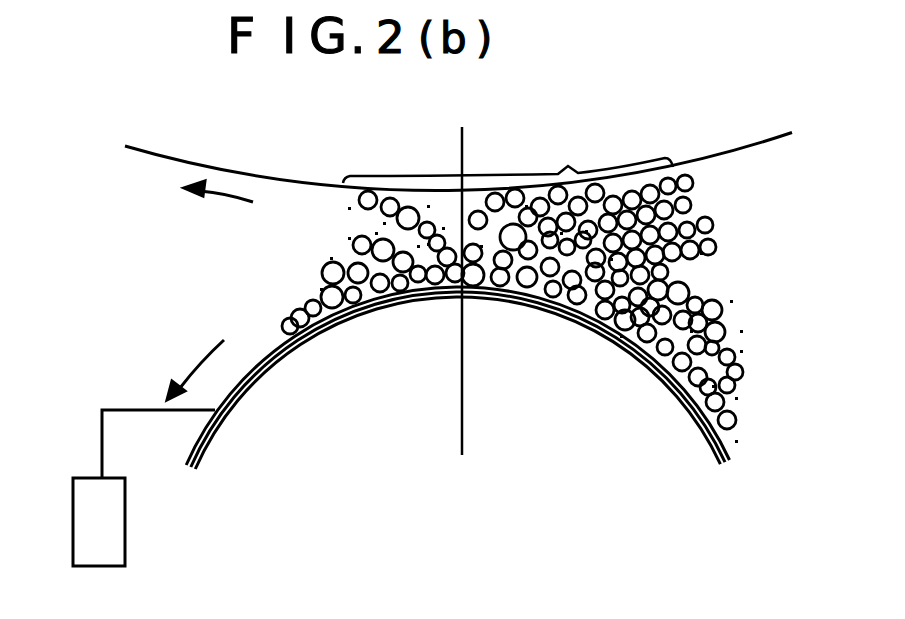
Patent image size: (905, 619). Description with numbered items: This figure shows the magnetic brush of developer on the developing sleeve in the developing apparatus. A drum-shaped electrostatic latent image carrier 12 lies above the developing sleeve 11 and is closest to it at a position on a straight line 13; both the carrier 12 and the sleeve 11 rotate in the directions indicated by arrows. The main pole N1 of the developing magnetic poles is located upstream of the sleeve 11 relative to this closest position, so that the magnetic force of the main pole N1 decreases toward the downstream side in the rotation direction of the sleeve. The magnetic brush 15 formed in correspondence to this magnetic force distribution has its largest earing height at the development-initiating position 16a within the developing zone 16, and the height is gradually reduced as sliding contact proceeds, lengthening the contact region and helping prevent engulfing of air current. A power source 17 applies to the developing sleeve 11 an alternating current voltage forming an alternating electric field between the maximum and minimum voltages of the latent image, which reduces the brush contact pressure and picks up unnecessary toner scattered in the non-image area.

The developing sleeve 11 is at (730, 444).
The electrostatic latent image carrier 12 is at (783, 137).
The straight line 13 is at (462, 162).
The magnetic brush 15 is at (750, 321).
The developing zone 16 is at (512, 286).
The development-initiating position 16a is at (680, 188).
The power source 17 is at (118, 488).
The main pole N1 is at (554, 339).